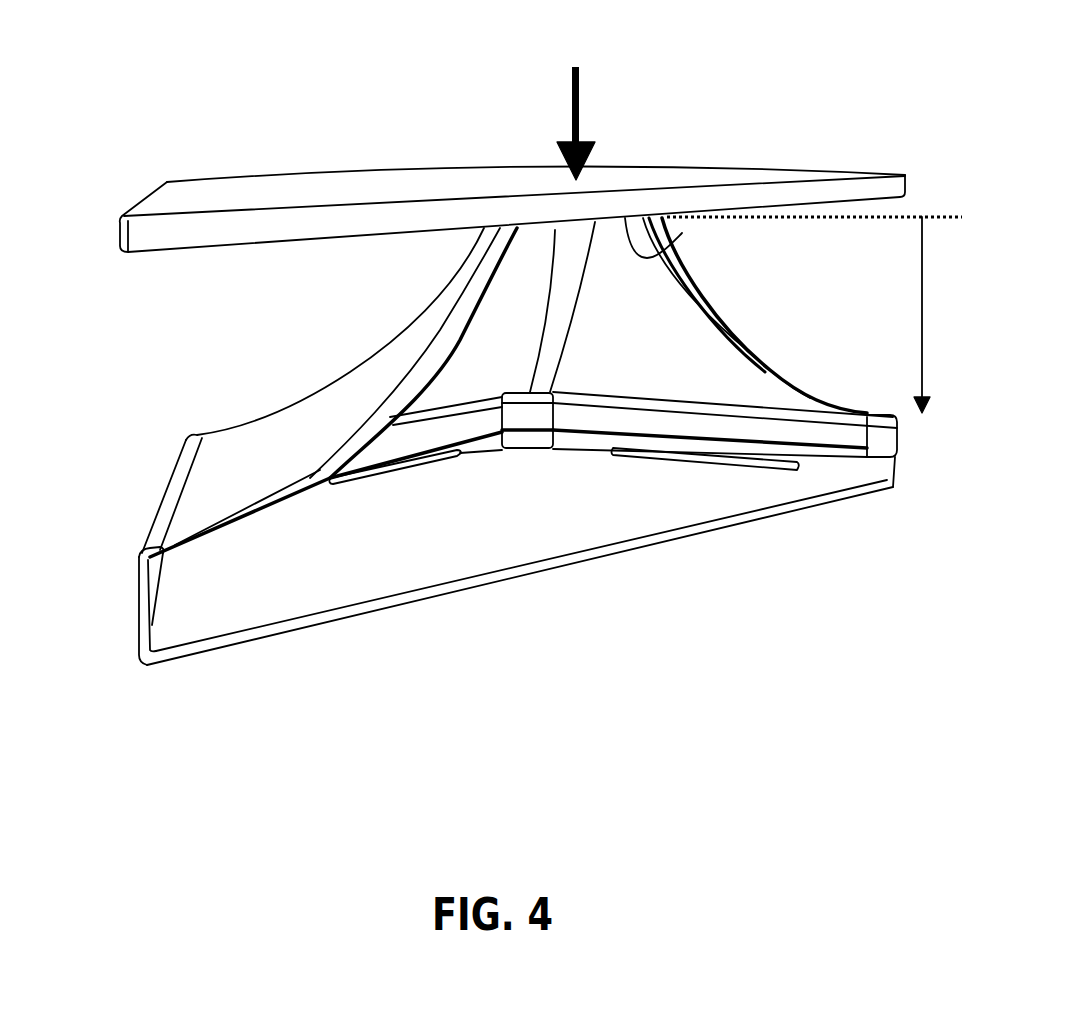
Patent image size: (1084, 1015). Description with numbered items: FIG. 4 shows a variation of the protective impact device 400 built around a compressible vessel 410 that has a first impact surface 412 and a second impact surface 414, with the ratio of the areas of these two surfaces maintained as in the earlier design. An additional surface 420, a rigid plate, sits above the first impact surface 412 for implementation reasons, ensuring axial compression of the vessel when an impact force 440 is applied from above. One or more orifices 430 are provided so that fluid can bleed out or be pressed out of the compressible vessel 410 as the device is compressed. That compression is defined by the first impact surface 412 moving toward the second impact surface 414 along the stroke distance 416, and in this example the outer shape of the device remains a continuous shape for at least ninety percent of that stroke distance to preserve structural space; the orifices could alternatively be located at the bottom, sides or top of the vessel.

The protective impact device 400 is at (283, 683).
The compressible vessel 410 is at (348, 331).
The first impact surface 412 is at (677, 238).
The second impact surface 414 is at (763, 517).
The stroke distance 416 is at (922, 352).
The additional surface 420 is at (168, 183).
The orifices 430 is at (413, 470).
The impact force 440 is at (572, 83).